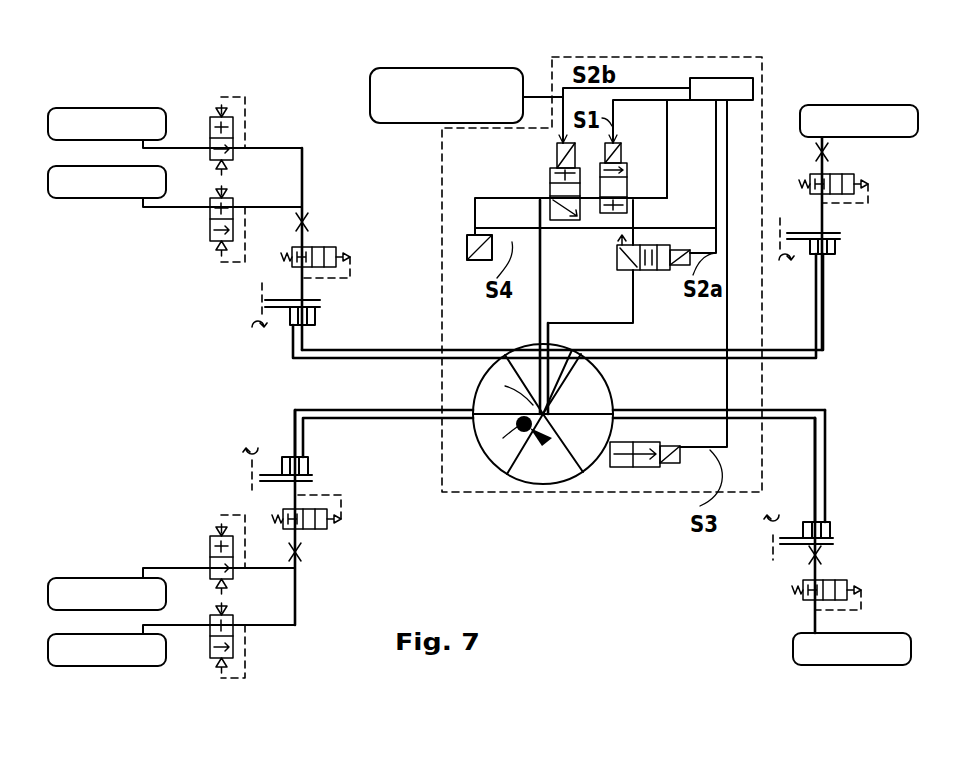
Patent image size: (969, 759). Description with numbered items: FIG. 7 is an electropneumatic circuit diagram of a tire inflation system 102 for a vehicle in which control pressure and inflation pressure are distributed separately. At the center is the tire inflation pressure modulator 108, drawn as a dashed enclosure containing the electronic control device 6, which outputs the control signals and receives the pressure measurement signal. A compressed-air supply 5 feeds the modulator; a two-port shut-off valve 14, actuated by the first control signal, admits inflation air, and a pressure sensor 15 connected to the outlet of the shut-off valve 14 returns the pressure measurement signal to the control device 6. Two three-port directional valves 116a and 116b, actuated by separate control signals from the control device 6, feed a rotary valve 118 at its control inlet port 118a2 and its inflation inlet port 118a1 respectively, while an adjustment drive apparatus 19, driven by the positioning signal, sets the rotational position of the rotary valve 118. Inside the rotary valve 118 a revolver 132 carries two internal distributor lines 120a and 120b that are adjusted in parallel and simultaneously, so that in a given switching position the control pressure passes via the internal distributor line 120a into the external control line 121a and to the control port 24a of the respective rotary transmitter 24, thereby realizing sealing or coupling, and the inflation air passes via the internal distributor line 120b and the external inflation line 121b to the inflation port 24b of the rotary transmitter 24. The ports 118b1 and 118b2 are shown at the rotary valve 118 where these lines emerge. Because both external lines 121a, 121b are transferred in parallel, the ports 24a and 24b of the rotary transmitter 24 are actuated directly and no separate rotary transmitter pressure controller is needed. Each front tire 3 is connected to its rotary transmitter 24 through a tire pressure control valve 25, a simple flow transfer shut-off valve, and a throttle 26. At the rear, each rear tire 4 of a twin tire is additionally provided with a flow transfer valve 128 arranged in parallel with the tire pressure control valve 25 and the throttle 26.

The front tire 3 is at (838, 118).
The rear tire 4 is at (78, 124).
The compressed-air supply 5 is at (480, 80).
The electronic control device 6 is at (748, 82).
The 2/2 shut-off valve 14 is at (626, 168).
The pressure sensor 15 is at (467, 246).
The adjustment drive apparatus 19 is at (638, 468).
The rotary transmitter 24 is at (318, 305).
The control port 24a is at (315, 316).
The inflation port 24b is at (292, 455).
The tire pressure control valve 25 is at (335, 250).
The throttle 26 is at (310, 222).
The tire inflation system 102 is at (166, 327).
The tire inflation pressure modulator 108 is at (477, 486).
The 3/2 directional valve 116a is at (660, 272).
The further 3/2 directional valve 116b is at (550, 176).
The rotary valve 118 is at (553, 484).
The inflation inlet port 118a1 is at (537, 345).
The control inlet port 118a2 is at (548, 336).
The working line 118b1 is at (473, 412).
The working line 118b2 is at (474, 425).
The internal distributor line 120a is at (572, 368).
The internal distributor line 120b is at (580, 354).
The external control line 121a is at (826, 288).
The external inflation line 121b is at (826, 335).
The flow transfer valve 128 is at (210, 232).
The revolver 132 is at (530, 478).